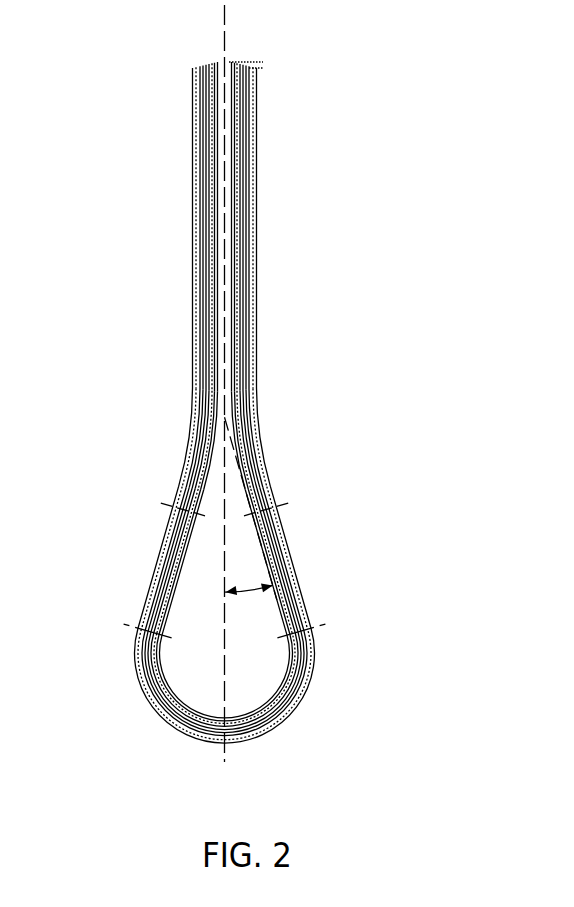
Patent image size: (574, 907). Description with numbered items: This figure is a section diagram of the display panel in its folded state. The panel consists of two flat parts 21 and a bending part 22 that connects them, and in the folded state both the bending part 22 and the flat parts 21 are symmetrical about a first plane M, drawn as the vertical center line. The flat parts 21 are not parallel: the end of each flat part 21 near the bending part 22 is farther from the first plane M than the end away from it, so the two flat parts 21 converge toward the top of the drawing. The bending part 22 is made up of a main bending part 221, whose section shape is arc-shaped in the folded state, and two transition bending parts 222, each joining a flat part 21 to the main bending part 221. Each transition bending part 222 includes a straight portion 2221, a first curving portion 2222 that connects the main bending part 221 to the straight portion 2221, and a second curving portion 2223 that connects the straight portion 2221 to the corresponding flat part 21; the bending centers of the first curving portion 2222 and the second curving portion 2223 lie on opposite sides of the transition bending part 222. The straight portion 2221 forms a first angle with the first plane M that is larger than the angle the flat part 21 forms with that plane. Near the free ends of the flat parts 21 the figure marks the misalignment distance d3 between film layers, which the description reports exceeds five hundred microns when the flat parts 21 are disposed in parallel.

The flat part 21 is at (187, 204).
The bending part 22 is at (249, 579).
The main bending part 221 is at (332, 653).
The transition bending part 222 is at (231, 520).
The straight portion 2221 is at (301, 572).
The first curving portion 2222 is at (320, 642).
The second curving portion 2223 is at (266, 450).
The first plane M is at (225, 40).
The misalignment distance d3 is at (266, 65).